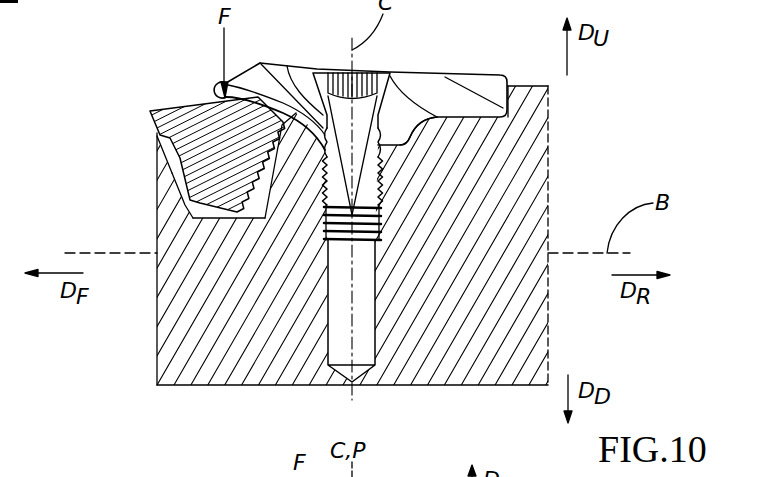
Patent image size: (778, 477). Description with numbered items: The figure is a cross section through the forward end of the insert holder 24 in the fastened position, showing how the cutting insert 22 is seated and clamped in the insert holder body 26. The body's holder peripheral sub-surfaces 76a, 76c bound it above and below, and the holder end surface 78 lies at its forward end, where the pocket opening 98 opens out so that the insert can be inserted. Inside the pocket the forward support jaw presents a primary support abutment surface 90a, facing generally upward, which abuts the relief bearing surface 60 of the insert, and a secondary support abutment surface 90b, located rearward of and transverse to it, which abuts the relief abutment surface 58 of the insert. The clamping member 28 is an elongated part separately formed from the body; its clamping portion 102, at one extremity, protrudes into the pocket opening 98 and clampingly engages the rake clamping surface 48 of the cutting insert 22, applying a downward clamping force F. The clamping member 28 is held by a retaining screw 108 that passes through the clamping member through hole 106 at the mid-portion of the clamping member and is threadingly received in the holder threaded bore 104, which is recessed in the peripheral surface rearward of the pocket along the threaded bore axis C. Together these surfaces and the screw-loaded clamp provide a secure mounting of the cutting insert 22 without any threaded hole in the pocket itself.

The cutting insert 22 is at (140, 110).
The insert holder 24 is at (603, 112).
The insert holder body 26 is at (518, 312).
The clamping member 28 is at (457, 98).
The rake clamping surface 48 is at (203, 98).
The relief abutment surface 58 is at (157, 207).
The relief bearing surface 60 is at (157, 157).
The holder peripheral sub-surface 76a is at (524, 86).
The holder peripheral sub-surface 76c is at (480, 387).
The holder end surface 78 is at (157, 318).
The primary support abutment surface 90a is at (157, 133).
The secondary support abutment surface 90b is at (157, 182).
The pocket opening 98 is at (143, 93).
The clamping portion 102 is at (213, 93).
The holder threaded bore 104 is at (327, 240).
The clamping member through hole 106 is at (314, 86).
The retaining screw 108 is at (410, 120).